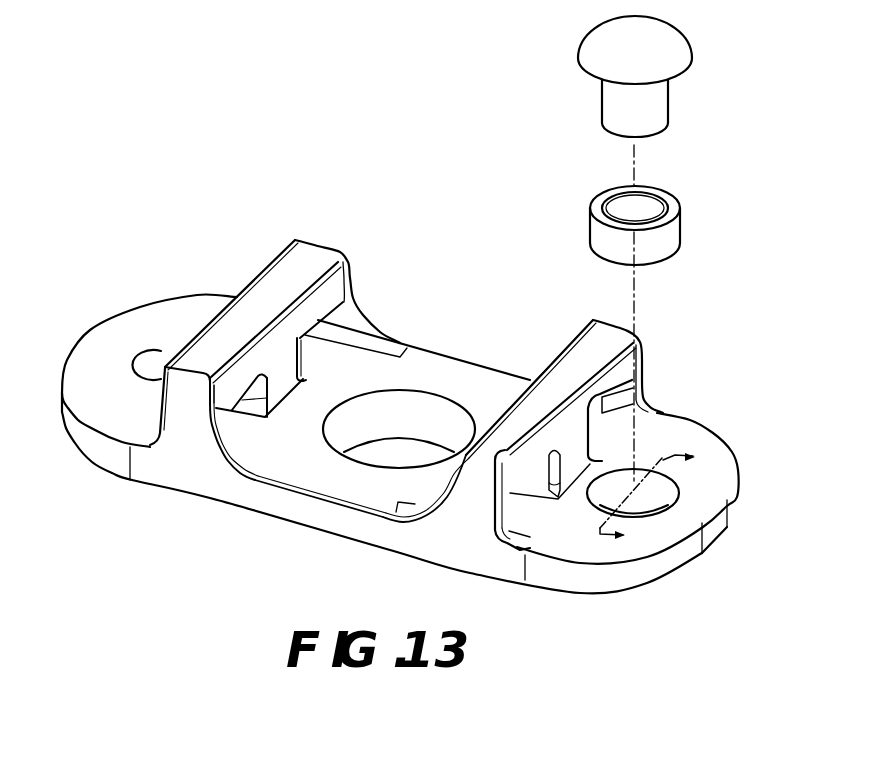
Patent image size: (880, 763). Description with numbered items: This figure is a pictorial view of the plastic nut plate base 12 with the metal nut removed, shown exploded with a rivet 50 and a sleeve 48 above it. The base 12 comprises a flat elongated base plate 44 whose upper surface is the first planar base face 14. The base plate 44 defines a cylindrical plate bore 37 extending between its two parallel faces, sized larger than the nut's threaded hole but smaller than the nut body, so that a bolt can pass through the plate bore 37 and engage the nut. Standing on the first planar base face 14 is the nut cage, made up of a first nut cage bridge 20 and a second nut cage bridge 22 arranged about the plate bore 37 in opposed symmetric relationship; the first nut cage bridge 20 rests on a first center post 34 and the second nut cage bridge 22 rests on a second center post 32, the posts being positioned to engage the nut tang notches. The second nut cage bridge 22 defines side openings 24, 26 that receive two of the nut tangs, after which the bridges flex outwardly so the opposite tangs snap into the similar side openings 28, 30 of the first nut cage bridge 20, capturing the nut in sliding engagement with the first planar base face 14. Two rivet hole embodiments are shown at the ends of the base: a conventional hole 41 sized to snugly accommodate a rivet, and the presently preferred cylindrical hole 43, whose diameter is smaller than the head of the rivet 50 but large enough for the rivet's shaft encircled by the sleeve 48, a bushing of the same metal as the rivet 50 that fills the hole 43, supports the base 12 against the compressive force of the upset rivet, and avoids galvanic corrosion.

The nut plate base 12 is at (719, 555).
The first planar base face 14 is at (157, 317).
The first nut cage bridge 20 is at (262, 292).
The second nut cage bridge 22 is at (580, 358).
The side opening 24 is at (533, 512).
The side opening 26 is at (610, 429).
The side opening 28 is at (243, 427).
The side opening 30 is at (325, 353).
The second center post 32 is at (567, 452).
The first center post 34 is at (280, 377).
The plate bore 37 is at (380, 418).
The hole 41 is at (153, 363).
The hole 43 is at (660, 497).
The base plate 44 is at (498, 366).
The sleeve 48 is at (680, 218).
The rivet 50 is at (660, 100).